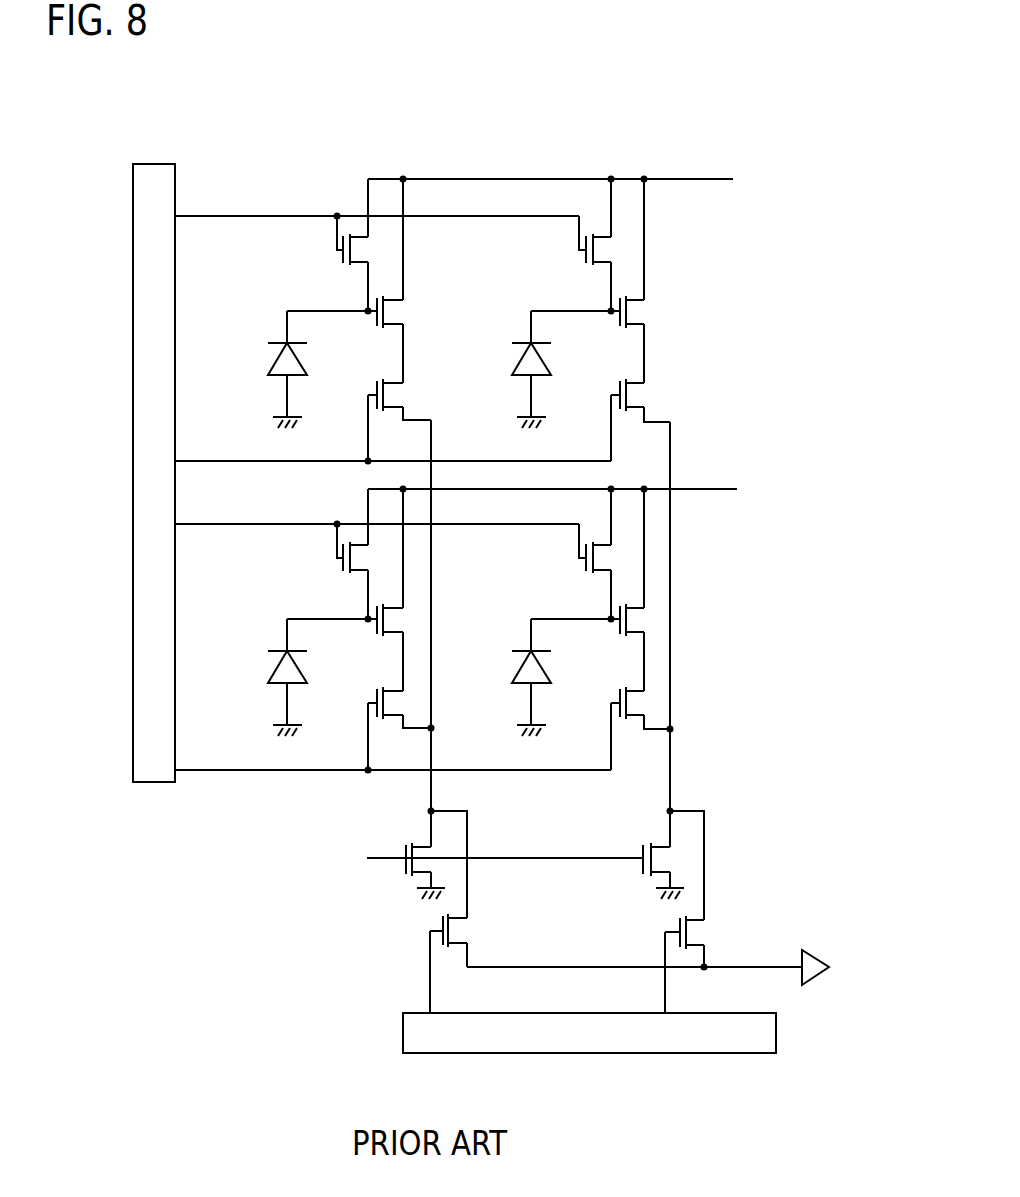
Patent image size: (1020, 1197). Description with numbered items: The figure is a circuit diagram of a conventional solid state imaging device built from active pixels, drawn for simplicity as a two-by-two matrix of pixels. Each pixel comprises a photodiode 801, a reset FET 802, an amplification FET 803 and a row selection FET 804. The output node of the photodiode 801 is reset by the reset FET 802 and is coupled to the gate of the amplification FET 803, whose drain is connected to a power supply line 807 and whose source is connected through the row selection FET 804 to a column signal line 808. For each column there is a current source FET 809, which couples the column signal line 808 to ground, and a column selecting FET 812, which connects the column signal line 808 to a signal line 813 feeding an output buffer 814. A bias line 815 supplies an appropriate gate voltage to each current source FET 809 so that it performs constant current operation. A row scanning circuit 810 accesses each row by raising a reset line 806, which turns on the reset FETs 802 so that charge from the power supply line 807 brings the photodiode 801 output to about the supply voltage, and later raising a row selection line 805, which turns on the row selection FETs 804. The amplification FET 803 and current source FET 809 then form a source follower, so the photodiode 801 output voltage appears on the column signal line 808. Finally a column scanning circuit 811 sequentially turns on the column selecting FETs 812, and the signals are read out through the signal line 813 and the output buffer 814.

The photodiode 801 is at (521, 654).
The reset FET 802 is at (594, 576).
The amplification FET 803 is at (630, 603).
The row selection FET 804 is at (630, 681).
The row selection line 805 is at (206, 768).
The reset line 806 is at (272, 522).
The power supply line 807 is at (708, 488).
The column signal line 808 is at (708, 772).
The current source FET 809 is at (653, 880).
The row scanning circuit 810 is at (152, 783).
The column scanning circuit 811 is at (403, 1030).
The column selecting FET 812 is at (740, 930).
The signal line 813 is at (580, 965).
The output buffer 814 is at (813, 973).
The bias line 815 is at (388, 856).